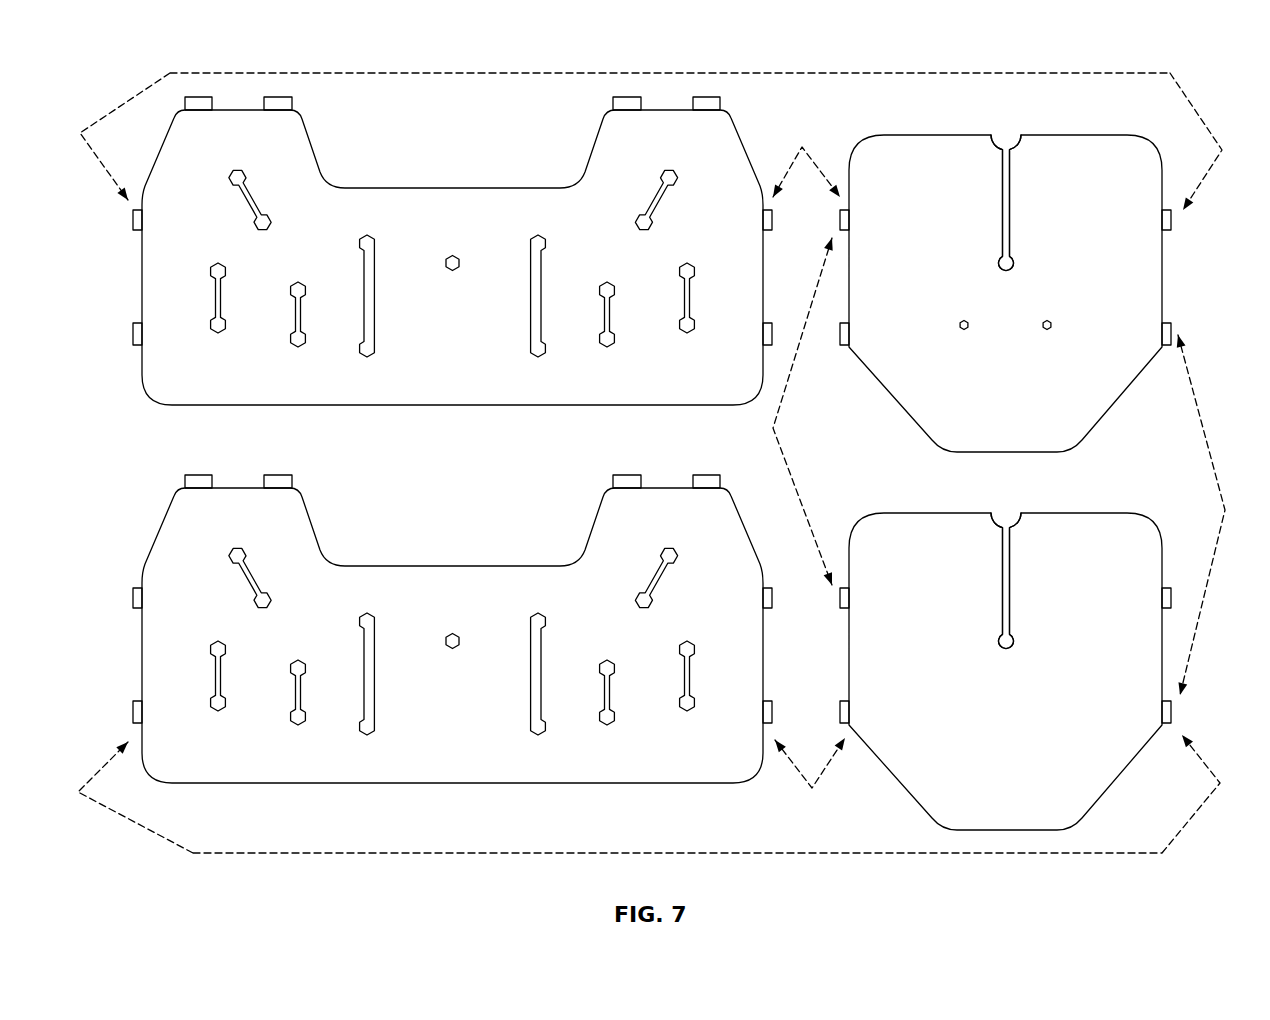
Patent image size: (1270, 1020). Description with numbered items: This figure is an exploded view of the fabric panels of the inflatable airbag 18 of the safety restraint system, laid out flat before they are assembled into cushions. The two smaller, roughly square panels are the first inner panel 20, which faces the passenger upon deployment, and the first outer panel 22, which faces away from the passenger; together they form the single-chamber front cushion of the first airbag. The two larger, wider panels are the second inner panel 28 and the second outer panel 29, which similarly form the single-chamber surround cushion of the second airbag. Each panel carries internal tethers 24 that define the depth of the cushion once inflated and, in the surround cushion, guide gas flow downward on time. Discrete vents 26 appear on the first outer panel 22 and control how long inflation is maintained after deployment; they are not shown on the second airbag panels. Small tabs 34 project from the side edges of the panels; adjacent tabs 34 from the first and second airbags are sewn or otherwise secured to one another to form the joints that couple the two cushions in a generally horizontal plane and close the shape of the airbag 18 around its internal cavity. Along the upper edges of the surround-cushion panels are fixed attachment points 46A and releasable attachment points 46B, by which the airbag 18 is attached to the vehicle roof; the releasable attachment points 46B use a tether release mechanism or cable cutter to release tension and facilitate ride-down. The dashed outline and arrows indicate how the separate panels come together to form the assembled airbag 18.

The inflatable airbag 18 is at (379, 38).
The first inner panel 20 is at (1147, 652).
The first outer panel 22 is at (1147, 262).
The internal tether 24 is at (1010, 192).
The discrete vent 26 is at (1053, 327).
The second inner panel 28 is at (448, 770).
The second outer panel 29 is at (497, 390).
The tab 34 is at (775, 712).
The fixed attachment point 46A is at (280, 97).
The releasable attachment point 46B is at (203, 97).